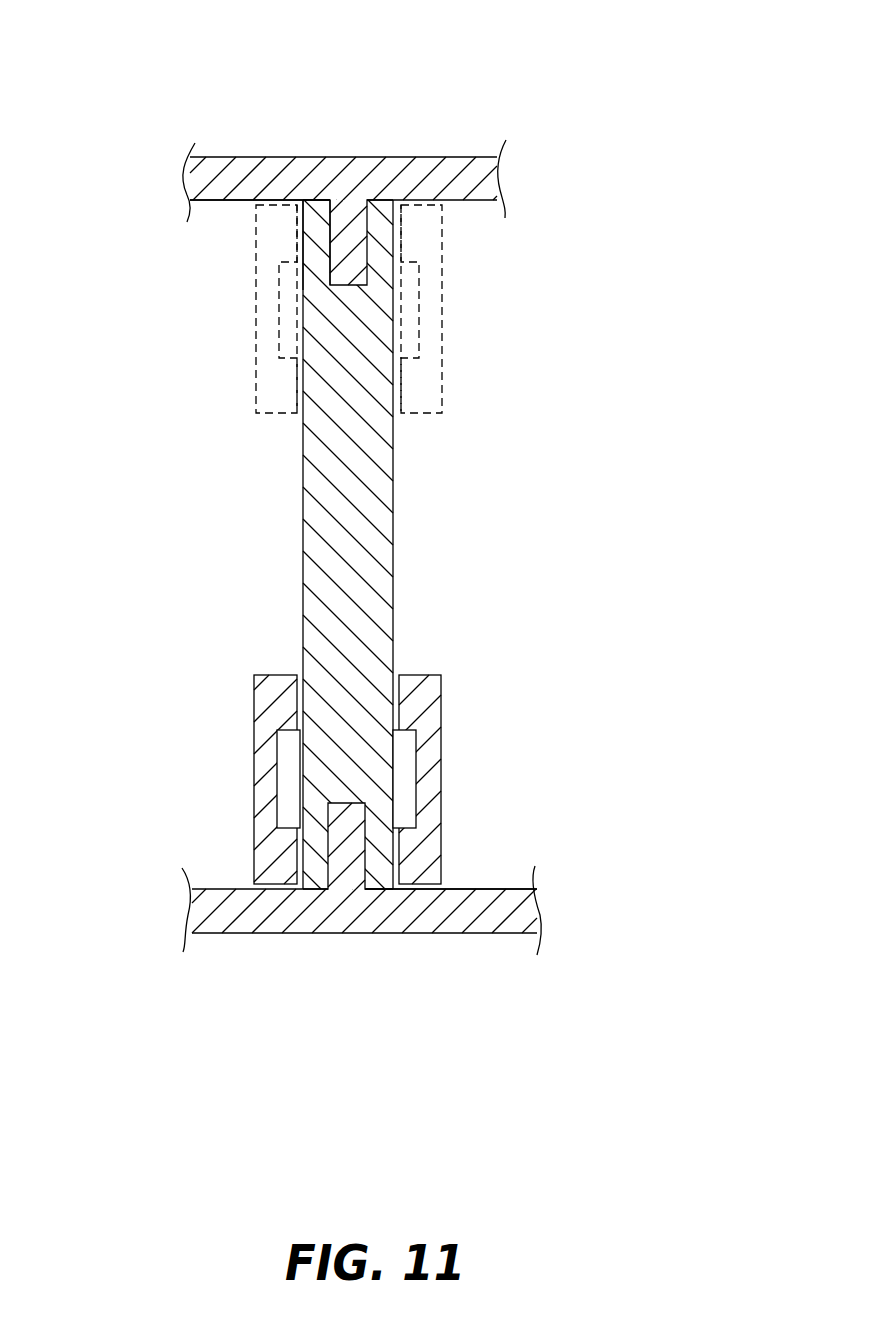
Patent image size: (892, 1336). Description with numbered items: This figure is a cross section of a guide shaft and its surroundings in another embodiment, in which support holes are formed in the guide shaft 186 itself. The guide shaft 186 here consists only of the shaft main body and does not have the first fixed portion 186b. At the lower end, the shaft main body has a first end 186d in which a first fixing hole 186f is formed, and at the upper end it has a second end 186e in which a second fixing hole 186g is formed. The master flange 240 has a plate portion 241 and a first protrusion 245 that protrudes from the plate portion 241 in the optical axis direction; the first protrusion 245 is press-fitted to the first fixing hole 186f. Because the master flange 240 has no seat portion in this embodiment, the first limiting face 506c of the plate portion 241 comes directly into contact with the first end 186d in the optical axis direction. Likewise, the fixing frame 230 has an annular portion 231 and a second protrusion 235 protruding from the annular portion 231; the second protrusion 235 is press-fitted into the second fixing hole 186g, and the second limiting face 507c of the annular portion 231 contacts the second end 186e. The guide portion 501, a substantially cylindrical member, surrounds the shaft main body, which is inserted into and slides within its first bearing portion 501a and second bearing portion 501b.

The fixing frame 230 is at (205, 150).
The annular portion 231 is at (253, 178).
The second protrusion 235 is at (342, 212).
The second limiting face 507c is at (218, 202).
The guide shaft 186 is at (400, 530).
The first fixed portion 186b is at (378, 483).
The second fixing hole 186g is at (357, 245).
The second end 186e is at (320, 252).
The first end 186d is at (320, 840).
The first fixing hole 186f is at (366, 853).
The guide portion 501 is at (461, 544).
The first bearing portion 501a is at (433, 395).
The second bearing portion 501b is at (423, 240).
The master flange 240 is at (233, 946).
The plate portion 241 is at (270, 918).
The first protrusion 245 is at (336, 878).
The first limiting face 506c is at (498, 890).